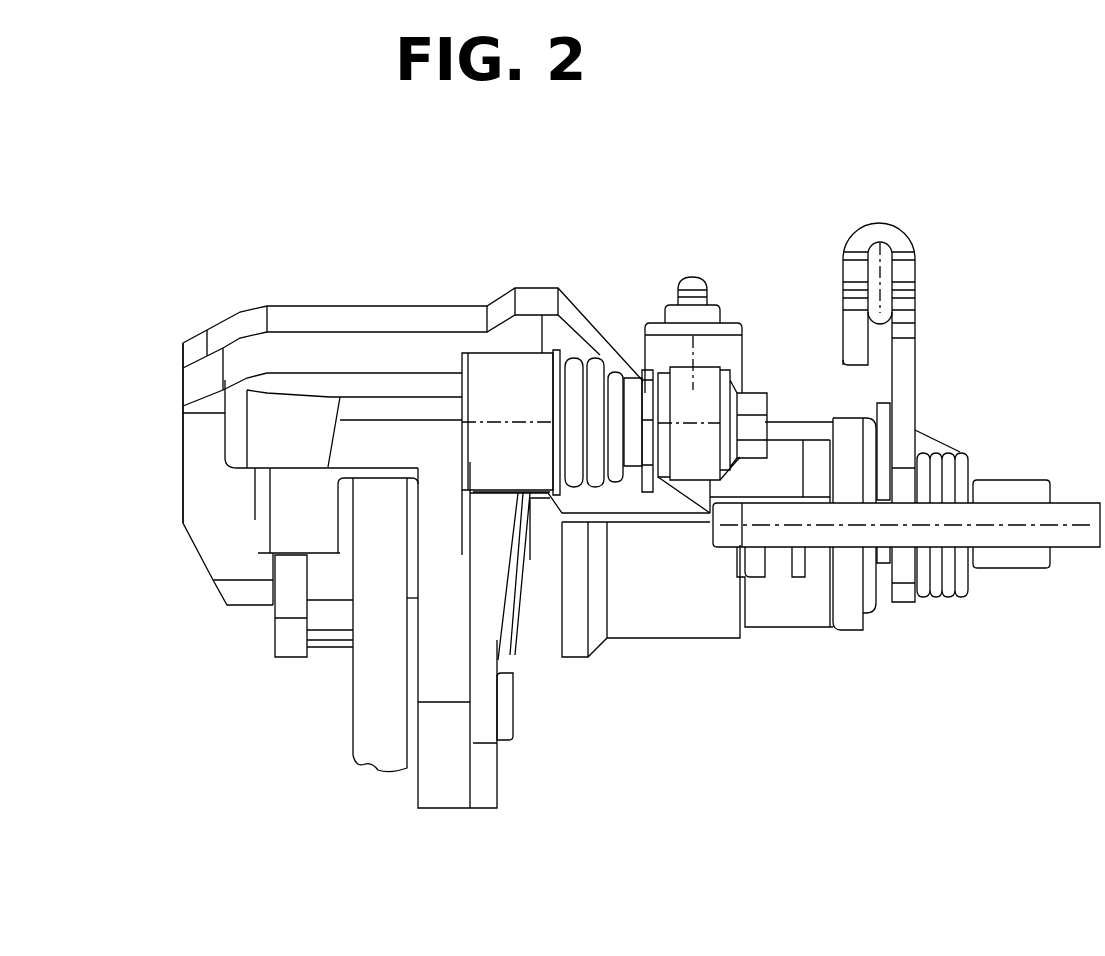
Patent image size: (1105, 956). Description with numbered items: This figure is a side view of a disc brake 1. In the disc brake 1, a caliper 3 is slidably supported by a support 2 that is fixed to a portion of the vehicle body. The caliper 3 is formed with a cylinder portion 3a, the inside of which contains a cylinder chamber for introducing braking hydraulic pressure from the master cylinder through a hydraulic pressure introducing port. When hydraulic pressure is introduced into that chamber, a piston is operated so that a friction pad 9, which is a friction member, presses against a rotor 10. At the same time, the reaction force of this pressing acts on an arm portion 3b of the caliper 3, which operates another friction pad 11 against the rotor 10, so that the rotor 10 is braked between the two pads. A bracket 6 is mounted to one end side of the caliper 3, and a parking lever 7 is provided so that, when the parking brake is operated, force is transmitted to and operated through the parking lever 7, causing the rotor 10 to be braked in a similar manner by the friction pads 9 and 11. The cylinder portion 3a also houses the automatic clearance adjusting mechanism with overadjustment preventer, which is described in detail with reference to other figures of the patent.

The disc brake 1 is at (558, 254).
The support 2 is at (498, 793).
The caliper 3 is at (367, 299).
The cylinder portion 3a is at (678, 640).
The arm portion 3b is at (183, 390).
The bracket 6 is at (1067, 518).
The parking lever 7 is at (903, 377).
The friction pad 9 is at (410, 632).
The rotor 10 is at (387, 737).
The friction pad 11 is at (323, 652).